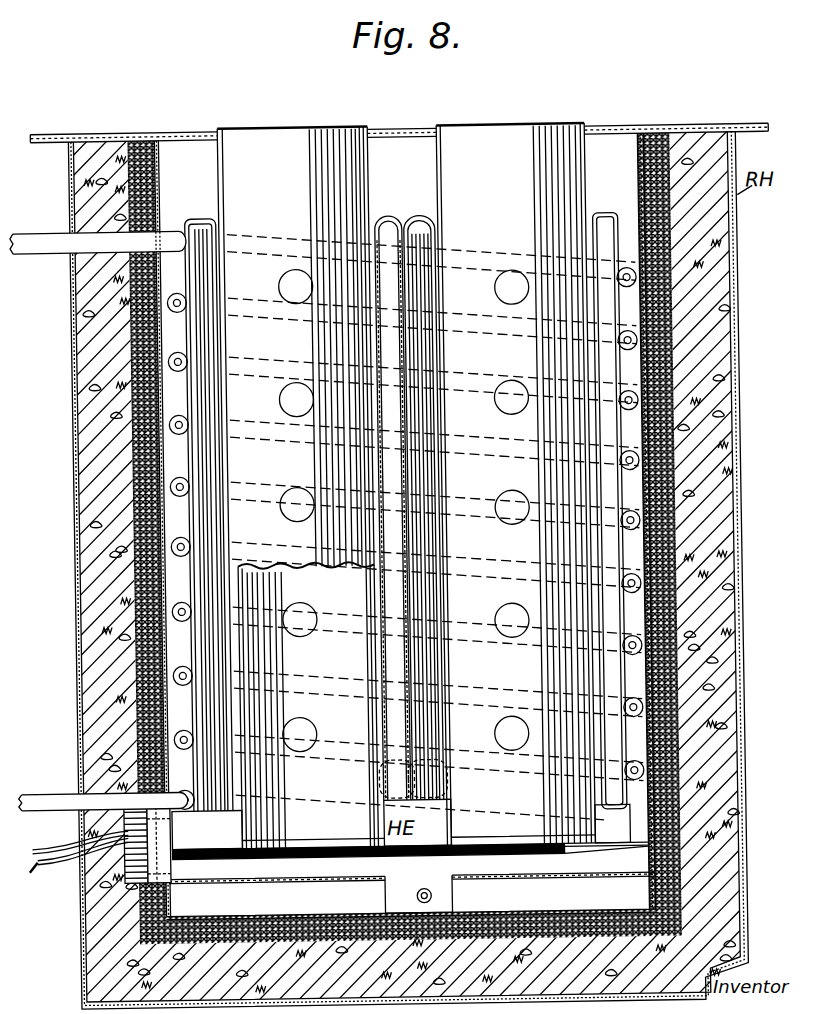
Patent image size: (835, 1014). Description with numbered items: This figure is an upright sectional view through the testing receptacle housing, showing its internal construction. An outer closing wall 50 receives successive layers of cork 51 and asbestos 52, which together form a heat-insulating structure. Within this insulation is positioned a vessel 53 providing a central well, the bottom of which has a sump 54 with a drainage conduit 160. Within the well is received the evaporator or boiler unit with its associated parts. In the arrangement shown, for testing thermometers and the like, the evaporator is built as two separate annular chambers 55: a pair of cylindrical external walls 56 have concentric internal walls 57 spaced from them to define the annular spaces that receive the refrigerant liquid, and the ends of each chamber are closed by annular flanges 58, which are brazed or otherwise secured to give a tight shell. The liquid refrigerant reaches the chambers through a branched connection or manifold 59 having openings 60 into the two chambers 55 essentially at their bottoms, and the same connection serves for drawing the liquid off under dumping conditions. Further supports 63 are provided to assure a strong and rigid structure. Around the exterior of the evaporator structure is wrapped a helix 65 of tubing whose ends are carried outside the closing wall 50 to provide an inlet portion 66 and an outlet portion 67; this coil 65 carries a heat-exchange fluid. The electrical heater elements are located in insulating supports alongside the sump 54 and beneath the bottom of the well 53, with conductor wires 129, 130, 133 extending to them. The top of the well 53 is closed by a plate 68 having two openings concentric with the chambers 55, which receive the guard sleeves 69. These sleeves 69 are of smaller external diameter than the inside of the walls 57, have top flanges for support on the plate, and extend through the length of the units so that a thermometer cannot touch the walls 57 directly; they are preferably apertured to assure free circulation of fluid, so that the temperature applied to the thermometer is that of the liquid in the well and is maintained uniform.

The outer closing wall 50 is at (741, 623).
The cork layer 51 is at (706, 667).
The asbestos layer 52 is at (668, 689).
The vessel 53 is at (672, 727).
The sump 54 is at (378, 892).
The annular chamber 55 is at (218, 215).
The cylindrical external wall 56 is at (382, 225).
The concentric internal wall 57 is at (382, 238).
The annular flange 58 is at (415, 216).
The branched connection or manifold 59 is at (446, 791).
The opening 60 is at (374, 772).
The support 63 is at (372, 656).
The helix of tubing 65 is at (640, 279).
The inlet portion 66 is at (38, 787).
The outlet portion 67 is at (53, 249).
The plate 68 is at (93, 129).
The guard sleeve 69 is at (268, 145).
The conductor wire 129 is at (80, 829).
The conductor wire 130 is at (83, 856).
The conductor wire 133 is at (28, 852).
The drainage conduit 160 is at (426, 897).